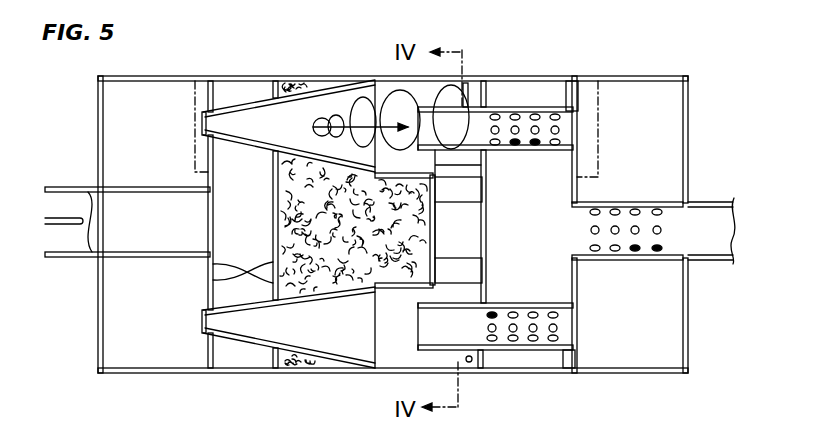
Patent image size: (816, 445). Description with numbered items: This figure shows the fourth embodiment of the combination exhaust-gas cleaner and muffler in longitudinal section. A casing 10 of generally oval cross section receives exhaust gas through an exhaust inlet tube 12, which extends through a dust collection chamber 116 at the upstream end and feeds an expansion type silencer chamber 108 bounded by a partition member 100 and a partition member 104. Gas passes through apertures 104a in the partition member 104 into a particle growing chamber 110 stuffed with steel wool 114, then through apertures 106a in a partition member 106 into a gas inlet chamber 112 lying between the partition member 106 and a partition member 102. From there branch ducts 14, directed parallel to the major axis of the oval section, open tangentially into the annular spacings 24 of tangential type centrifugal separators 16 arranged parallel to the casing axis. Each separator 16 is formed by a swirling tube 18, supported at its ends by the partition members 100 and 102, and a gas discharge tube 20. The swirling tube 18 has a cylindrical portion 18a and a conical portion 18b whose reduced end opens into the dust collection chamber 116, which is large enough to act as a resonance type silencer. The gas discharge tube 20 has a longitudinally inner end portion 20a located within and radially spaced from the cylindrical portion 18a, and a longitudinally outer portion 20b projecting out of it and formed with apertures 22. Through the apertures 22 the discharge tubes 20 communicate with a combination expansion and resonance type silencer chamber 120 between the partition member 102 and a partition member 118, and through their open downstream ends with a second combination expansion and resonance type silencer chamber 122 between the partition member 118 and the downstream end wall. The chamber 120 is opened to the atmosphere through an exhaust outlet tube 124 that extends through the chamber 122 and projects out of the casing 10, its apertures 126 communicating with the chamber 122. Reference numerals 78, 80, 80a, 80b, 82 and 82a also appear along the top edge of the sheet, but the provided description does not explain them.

The casing 10 is at (183, 77).
The exhaust inlet tube 12 is at (72, 187).
The branch ducts 14 is at (480, 190).
The tangential type centrifugal separators 16 is at (600, 97).
The swirling tube 18 is at (320, 79).
The cylindrical portion 18a is at (402, 83).
The conical portion 18b is at (240, 103).
The gas discharge tube 20 is at (527, 100).
The longitudinally inner end portion 20a is at (466, 83).
The longitudinally outer portion 20b is at (565, 80).
The apertures 22 is at (515, 145).
The annular spacings 24 is at (485, 177).
The element 78 is at (403, 0).
The element 80 is at (505, 0).
The element 80a is at (477, 12).
The element 80b is at (545, 17).
The element 82 is at (273, 10).
The element 82a is at (369, 11).
The partition member 100 is at (207, 350).
The partition member 102 is at (488, 260).
The partition member 104 is at (265, 357).
The apertures 104a is at (213, 276).
The partition member 106 is at (432, 204).
The apertures 106a is at (434, 250).
The expansion type silencer chamber 108 is at (261, 249).
The particle growing chamber 110 is at (368, 238).
The gas inlet chamber 112 is at (473, 244).
The steel wool 114 is at (275, 183).
The dust collection chamber 116 is at (168, 156).
The partition member 118 is at (579, 283).
The combination expansion and resonance type silencer chamber 120 is at (558, 255).
The combination expansion and resonance type silencer chamber 122 is at (650, 156).
The exhaust outlet tube 124 is at (705, 261).
The apertures 126 is at (637, 251).